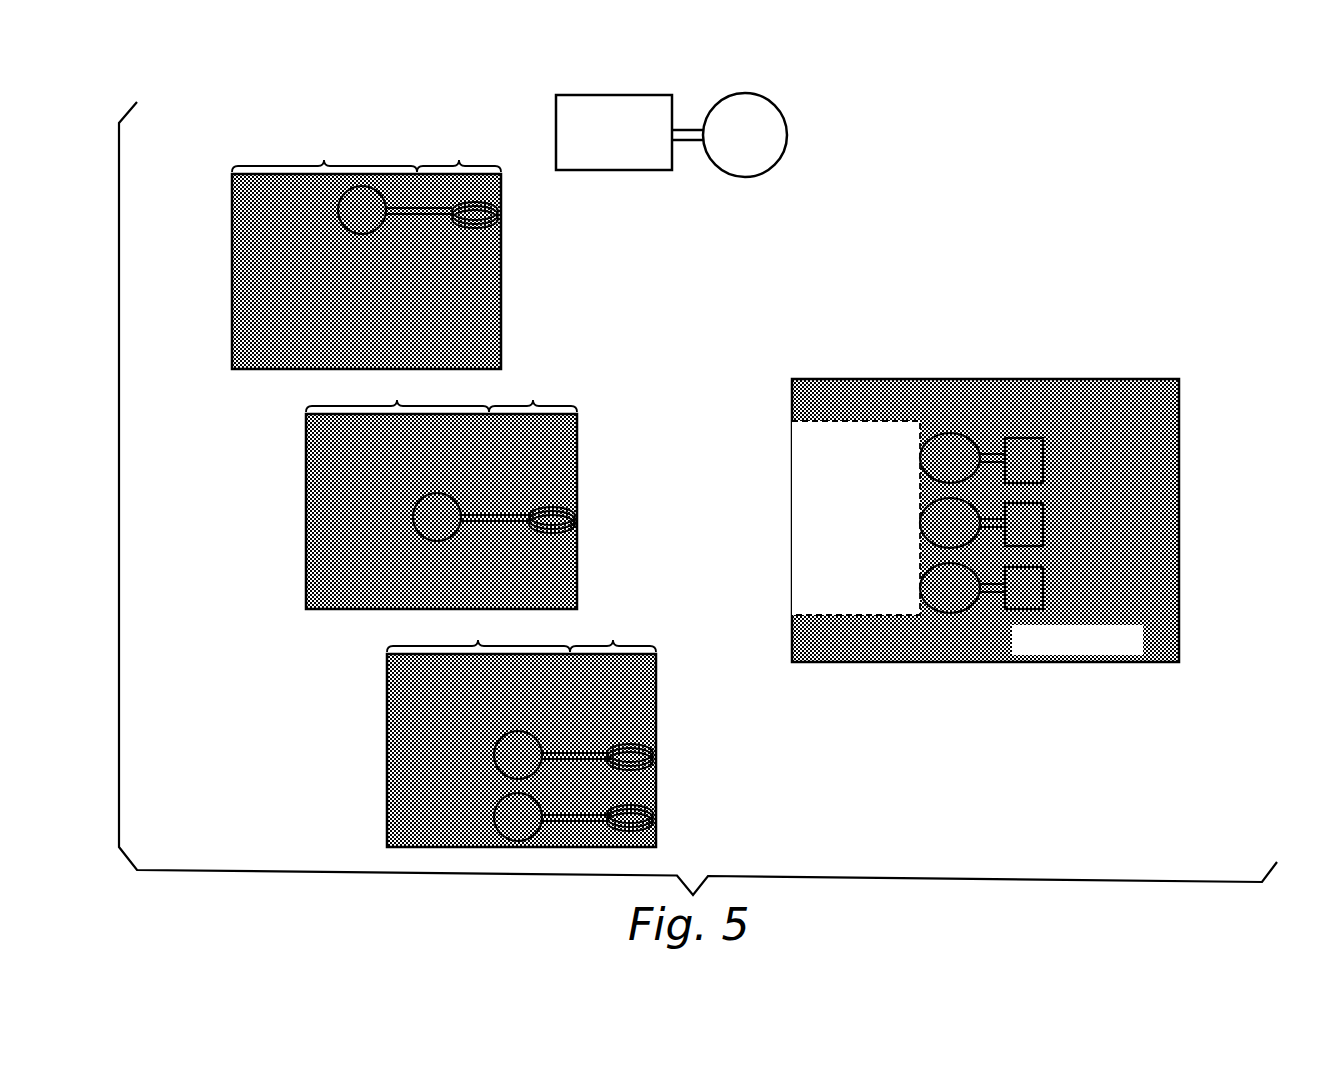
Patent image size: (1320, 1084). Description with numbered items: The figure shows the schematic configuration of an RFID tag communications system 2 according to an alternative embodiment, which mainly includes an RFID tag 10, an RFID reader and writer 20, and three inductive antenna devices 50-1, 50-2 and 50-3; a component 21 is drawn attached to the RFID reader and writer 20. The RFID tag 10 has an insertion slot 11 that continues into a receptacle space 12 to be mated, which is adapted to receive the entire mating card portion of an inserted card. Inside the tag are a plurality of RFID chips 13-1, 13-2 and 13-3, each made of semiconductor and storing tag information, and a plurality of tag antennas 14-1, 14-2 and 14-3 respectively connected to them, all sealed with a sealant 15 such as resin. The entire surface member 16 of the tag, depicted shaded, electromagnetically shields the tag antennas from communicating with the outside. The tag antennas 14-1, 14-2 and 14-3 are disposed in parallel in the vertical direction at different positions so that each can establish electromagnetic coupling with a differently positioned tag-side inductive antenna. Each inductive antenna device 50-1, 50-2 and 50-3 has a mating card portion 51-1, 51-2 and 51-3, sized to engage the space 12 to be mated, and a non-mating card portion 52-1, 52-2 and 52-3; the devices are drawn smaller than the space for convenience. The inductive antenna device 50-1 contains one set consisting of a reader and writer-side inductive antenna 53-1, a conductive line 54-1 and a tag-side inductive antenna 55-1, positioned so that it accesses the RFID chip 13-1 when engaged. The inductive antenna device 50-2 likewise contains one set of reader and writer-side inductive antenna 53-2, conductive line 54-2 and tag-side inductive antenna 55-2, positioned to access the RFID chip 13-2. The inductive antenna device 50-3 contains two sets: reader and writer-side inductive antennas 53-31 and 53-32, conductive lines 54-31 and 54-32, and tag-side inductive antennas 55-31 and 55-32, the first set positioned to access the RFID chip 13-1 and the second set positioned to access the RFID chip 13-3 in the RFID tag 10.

The RFID tag communications system 2 is at (993, 146).
The RFID tag 10 is at (1097, 675).
The insertion slot 11 is at (792, 462).
The receptacle space to be mated 12 is at (832, 432).
The RFID chip 13-1 is at (1043, 460).
The RFID chip 13-2 is at (1043, 525).
The RFID chip 13-3 is at (1043, 590).
The tag antenna 14-1 is at (920, 458).
The tag antenna 14-2 is at (920, 523).
The tag antenna 14-3 is at (920, 588).
The sealant 15 is at (912, 392).
The surface member 16 is at (1035, 380).
The RFID reader and writer 20 is at (556, 133).
The reader antenna 21 is at (788, 135).
The inductive antenna device 50-1 is at (501, 191).
The inductive antenna device 50-2 is at (577, 432).
The inductive antenna device 50-3 is at (656, 672).
The mating card portion 51-1 is at (459, 150).
The mating card portion 51-2 is at (533, 391).
The mating card portion 51-3 is at (613, 632).
The non-mating card portion 52-1 is at (324, 150).
The non-mating card portion 52-2 is at (397, 391).
The non-mating card portion 52-3 is at (478, 632).
The reader and writer-side inductive antenna 53-1 is at (338, 213).
The reader and writer-side inductive antenna 53-2 is at (413, 518).
The reader and writer-side inductive antenna 53-31 is at (494, 756).
The reader and writer-side inductive antenna 53-32 is at (494, 817).
The conductive line 54-1 is at (403, 217).
The conductive line 54-2 is at (485, 523).
The conductive line 54-31 is at (572, 760).
The conductive line 54-32 is at (572, 822).
The tag-side inductive antenna 55-1 is at (497, 225).
The tag-side inductive antenna 55-2 is at (577, 522).
The tag-side inductive antenna 55-31 is at (656, 760).
The tag-side inductive antenna 55-32 is at (656, 822).